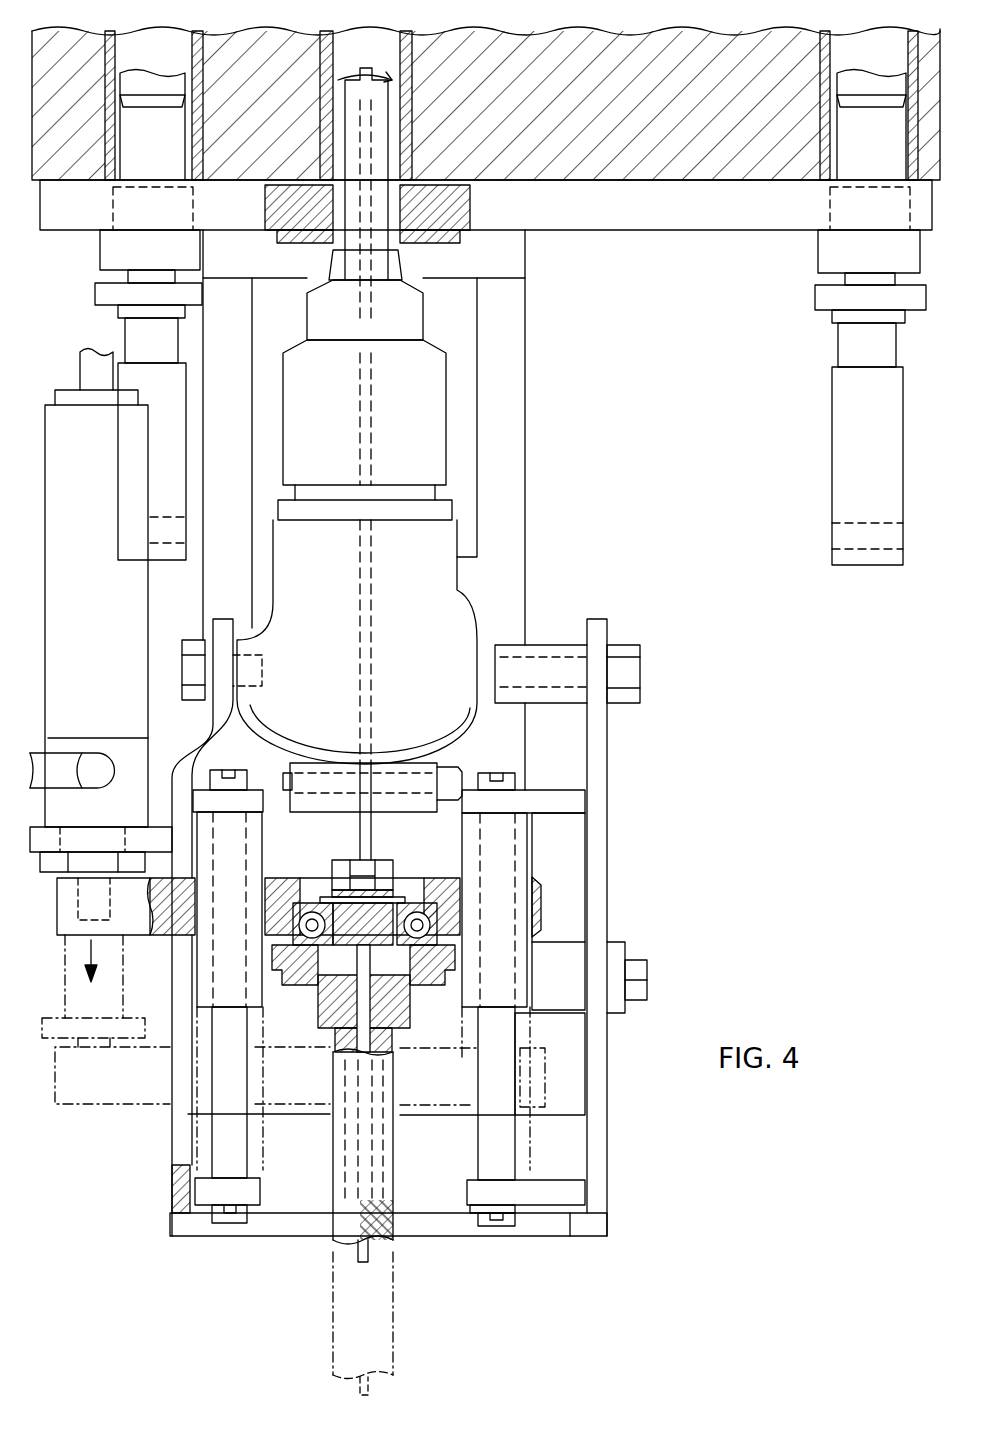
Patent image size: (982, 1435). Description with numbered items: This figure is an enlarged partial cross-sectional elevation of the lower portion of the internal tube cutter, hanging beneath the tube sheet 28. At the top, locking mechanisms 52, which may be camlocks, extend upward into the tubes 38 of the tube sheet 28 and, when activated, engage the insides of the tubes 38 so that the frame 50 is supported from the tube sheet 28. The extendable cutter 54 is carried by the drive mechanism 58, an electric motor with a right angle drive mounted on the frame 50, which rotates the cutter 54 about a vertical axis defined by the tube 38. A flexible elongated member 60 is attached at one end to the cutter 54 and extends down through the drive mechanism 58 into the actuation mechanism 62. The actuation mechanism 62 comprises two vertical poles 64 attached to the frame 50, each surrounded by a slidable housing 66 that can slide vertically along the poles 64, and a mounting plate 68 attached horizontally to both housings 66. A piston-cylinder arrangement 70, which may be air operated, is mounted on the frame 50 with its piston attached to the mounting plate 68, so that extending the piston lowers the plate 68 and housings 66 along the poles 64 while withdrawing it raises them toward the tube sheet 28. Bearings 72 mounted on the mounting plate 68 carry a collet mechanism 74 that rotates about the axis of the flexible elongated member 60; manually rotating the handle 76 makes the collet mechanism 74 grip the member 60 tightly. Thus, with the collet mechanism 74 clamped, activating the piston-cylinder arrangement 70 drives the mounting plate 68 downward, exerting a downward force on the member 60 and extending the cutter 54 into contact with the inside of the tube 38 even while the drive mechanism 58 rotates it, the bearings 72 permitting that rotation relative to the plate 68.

The tube sheet 28 is at (515, 46).
The tube 38 is at (415, 64).
The frame 50 is at (505, 323).
The locking mechanism 52 is at (110, 253).
The cutter 54 is at (378, 268).
The drive mechanism 58 is at (437, 608).
The flexible elongated member 60 is at (372, 822).
The actuation mechanism 62 is at (207, 1039).
The vertical pole 64 is at (225, 1128).
The slidable housing 66 is at (215, 957).
The mounting plate 68 is at (280, 878).
The piston-cylinder arrangement 70 is at (112, 642).
The bearings 72 is at (300, 918).
The collet mechanism 74 is at (395, 996).
The handle 76 is at (395, 1240).